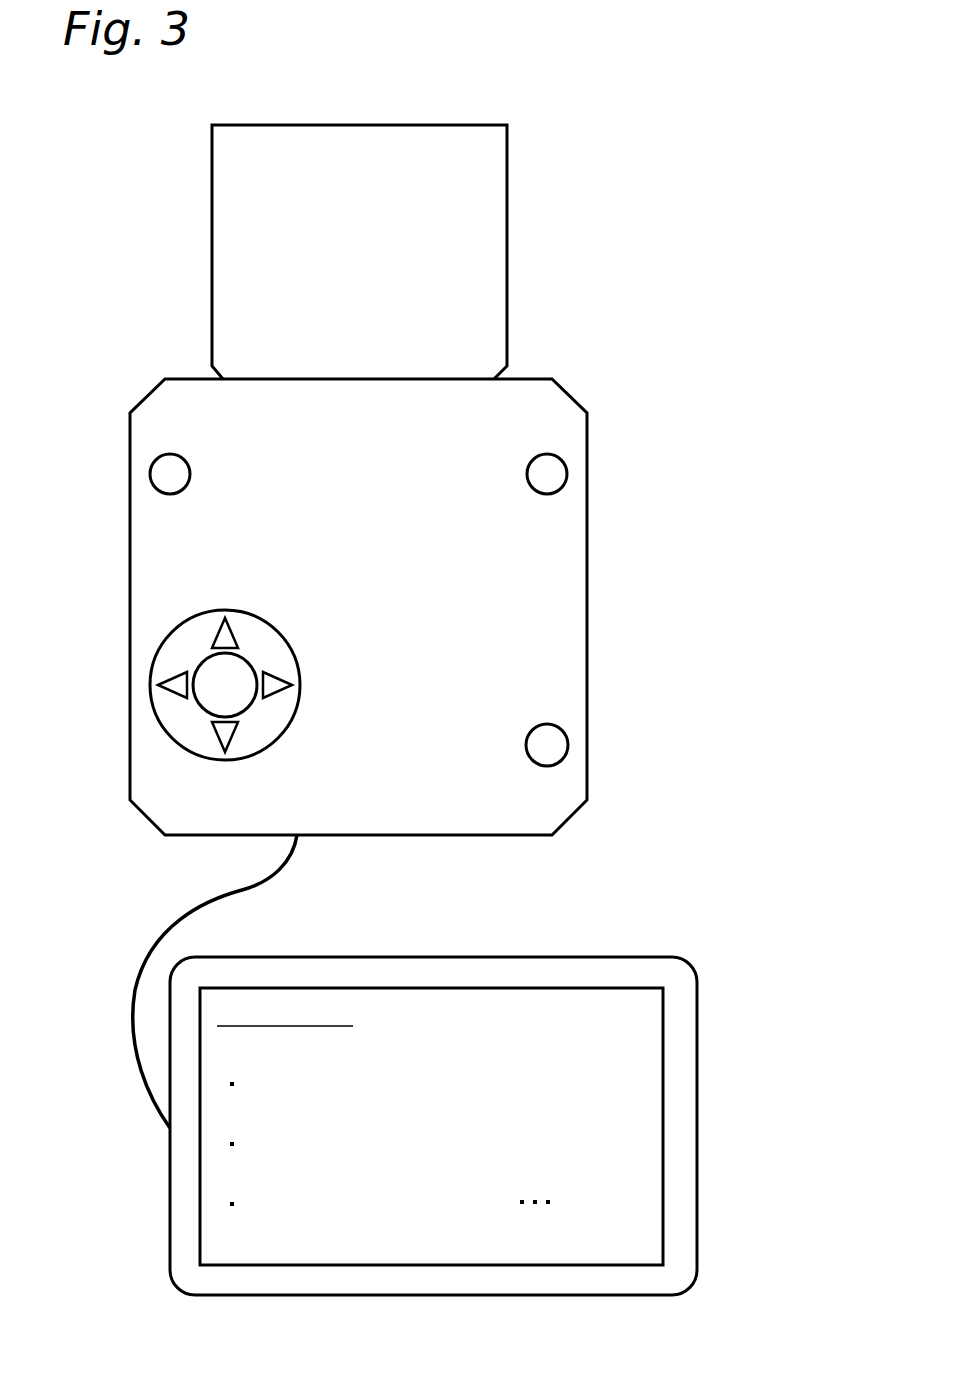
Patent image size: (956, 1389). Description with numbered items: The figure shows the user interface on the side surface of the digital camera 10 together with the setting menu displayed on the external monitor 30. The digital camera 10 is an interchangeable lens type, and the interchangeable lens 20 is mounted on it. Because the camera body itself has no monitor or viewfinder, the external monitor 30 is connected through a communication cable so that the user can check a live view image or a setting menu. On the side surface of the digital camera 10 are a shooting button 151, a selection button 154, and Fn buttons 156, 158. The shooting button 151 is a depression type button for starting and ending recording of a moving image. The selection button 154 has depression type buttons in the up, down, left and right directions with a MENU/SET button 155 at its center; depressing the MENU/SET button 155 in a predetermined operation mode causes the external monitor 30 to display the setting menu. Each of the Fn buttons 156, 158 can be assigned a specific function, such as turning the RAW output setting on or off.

The digital camera 10 is at (527, 378).
The interchangeable lens 20 is at (508, 218).
The external monitor 30 is at (585, 955).
The shooting button 151 is at (160, 455).
The selection button 154 is at (163, 638).
The MENU/SET button 155 is at (208, 703).
The Fn button 156 is at (566, 458).
The Fn button 158 is at (565, 732).